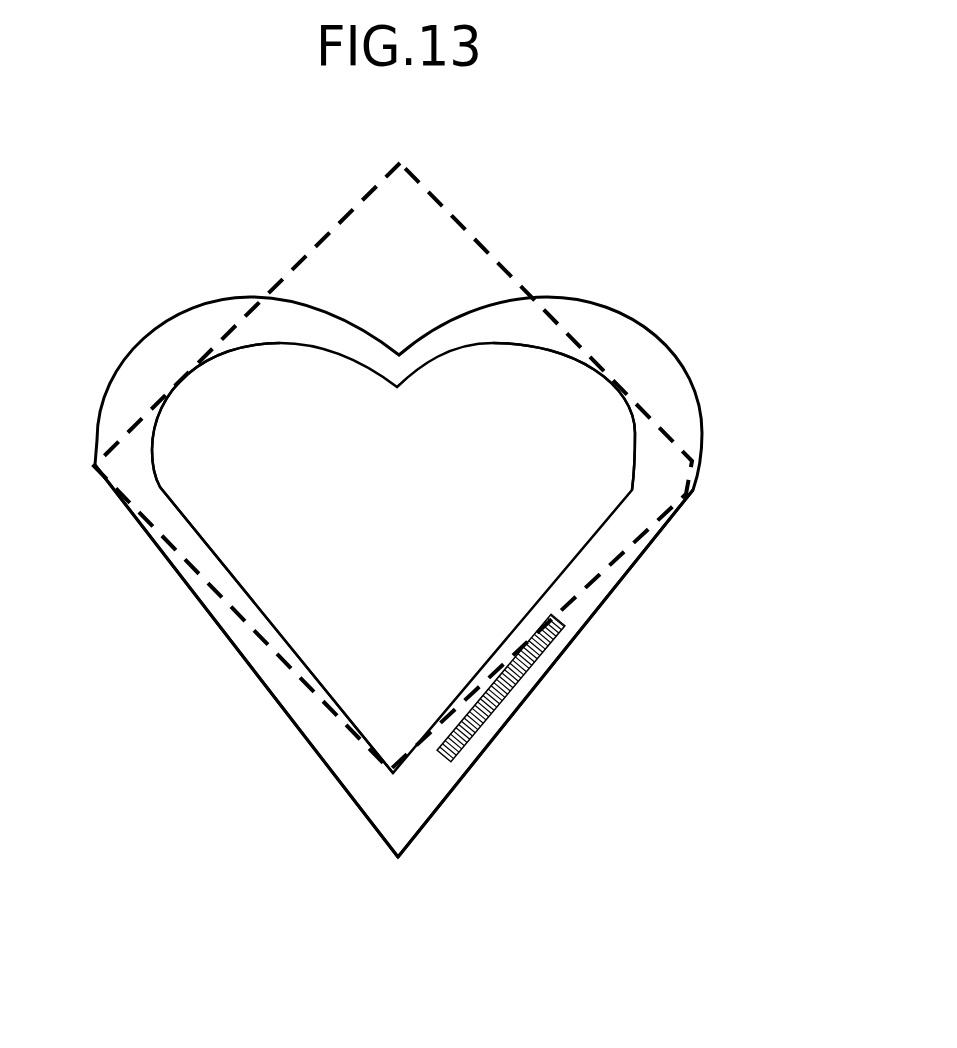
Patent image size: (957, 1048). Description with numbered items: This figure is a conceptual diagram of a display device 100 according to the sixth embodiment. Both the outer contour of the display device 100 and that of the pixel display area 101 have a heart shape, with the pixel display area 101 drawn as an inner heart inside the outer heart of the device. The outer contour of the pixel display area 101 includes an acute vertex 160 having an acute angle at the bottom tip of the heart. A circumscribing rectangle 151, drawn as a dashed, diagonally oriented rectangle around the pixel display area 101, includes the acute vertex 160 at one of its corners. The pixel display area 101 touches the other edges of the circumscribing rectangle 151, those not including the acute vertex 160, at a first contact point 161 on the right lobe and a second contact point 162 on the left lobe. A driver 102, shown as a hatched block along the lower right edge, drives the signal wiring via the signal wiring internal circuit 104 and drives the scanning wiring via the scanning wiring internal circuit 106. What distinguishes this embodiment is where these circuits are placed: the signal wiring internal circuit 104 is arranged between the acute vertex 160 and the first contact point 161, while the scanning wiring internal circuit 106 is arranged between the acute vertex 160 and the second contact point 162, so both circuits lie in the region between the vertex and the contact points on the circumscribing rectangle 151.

The display device 100 is at (458, 782).
The pixel display area 101 is at (507, 342).
The driver 102 is at (523, 687).
The signal wiring internal circuit 104 is at (640, 490).
The scanning wiring internal circuit 106 is at (227, 573).
The circumscribing rectangle 151 is at (640, 543).
The acute vertex 160 is at (360, 803).
The first contact point 161 is at (610, 373).
The second contact point 162 is at (177, 380).